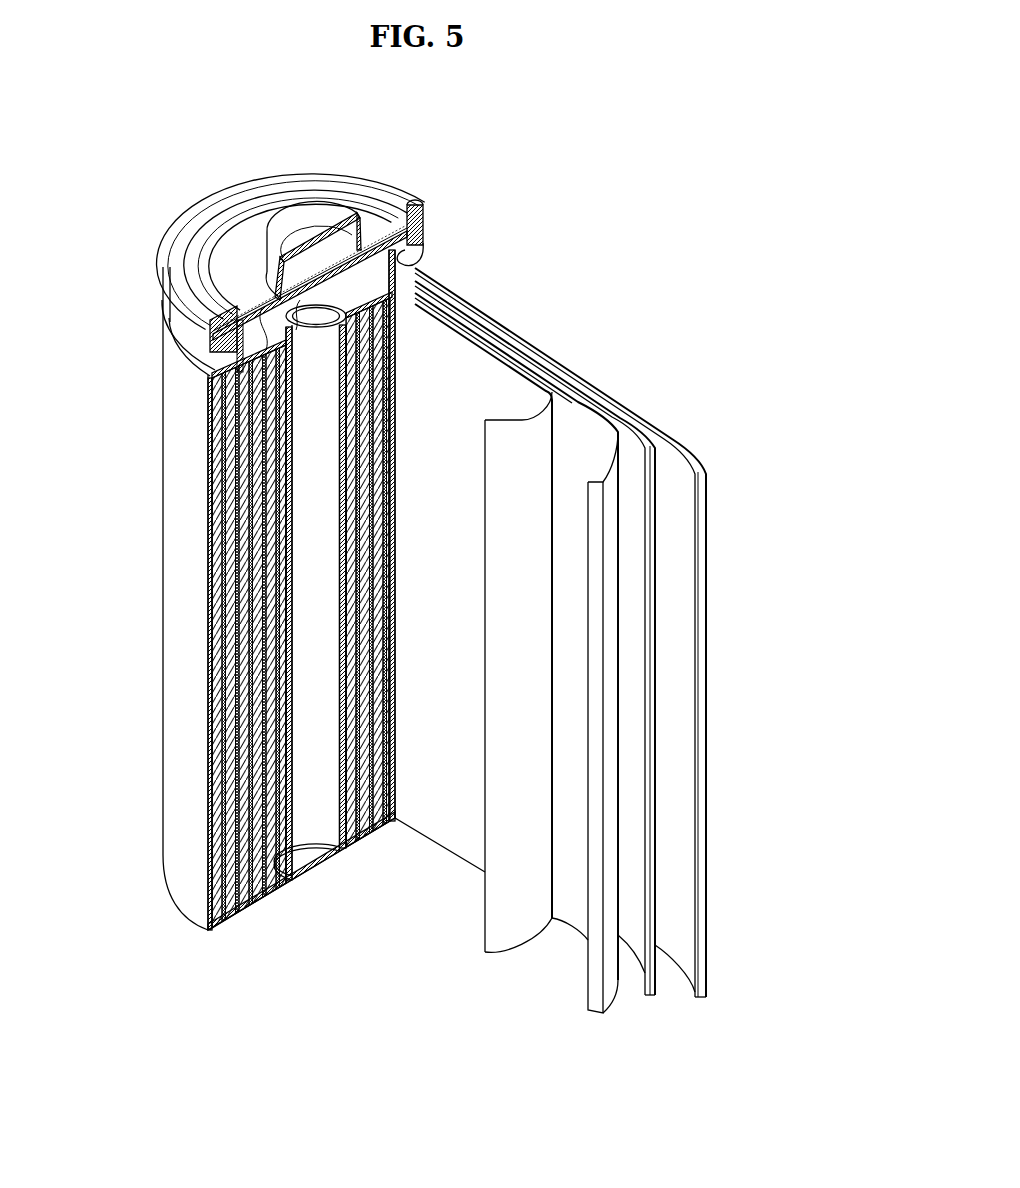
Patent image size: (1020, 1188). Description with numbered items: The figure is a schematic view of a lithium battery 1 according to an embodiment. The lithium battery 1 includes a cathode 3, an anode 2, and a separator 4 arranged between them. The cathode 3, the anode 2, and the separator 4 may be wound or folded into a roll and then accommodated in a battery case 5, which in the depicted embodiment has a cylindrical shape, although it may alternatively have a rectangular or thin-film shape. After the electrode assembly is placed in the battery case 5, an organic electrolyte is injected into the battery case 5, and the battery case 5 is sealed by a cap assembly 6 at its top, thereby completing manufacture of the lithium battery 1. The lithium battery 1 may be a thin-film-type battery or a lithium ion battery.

The lithium battery 1 is at (570, 197).
The anode 2 is at (682, 433).
The cathode 3 is at (606, 428).
The separator 4 is at (521, 420).
The battery case 5 is at (170, 598).
The cap assembly 6 is at (287, 219).